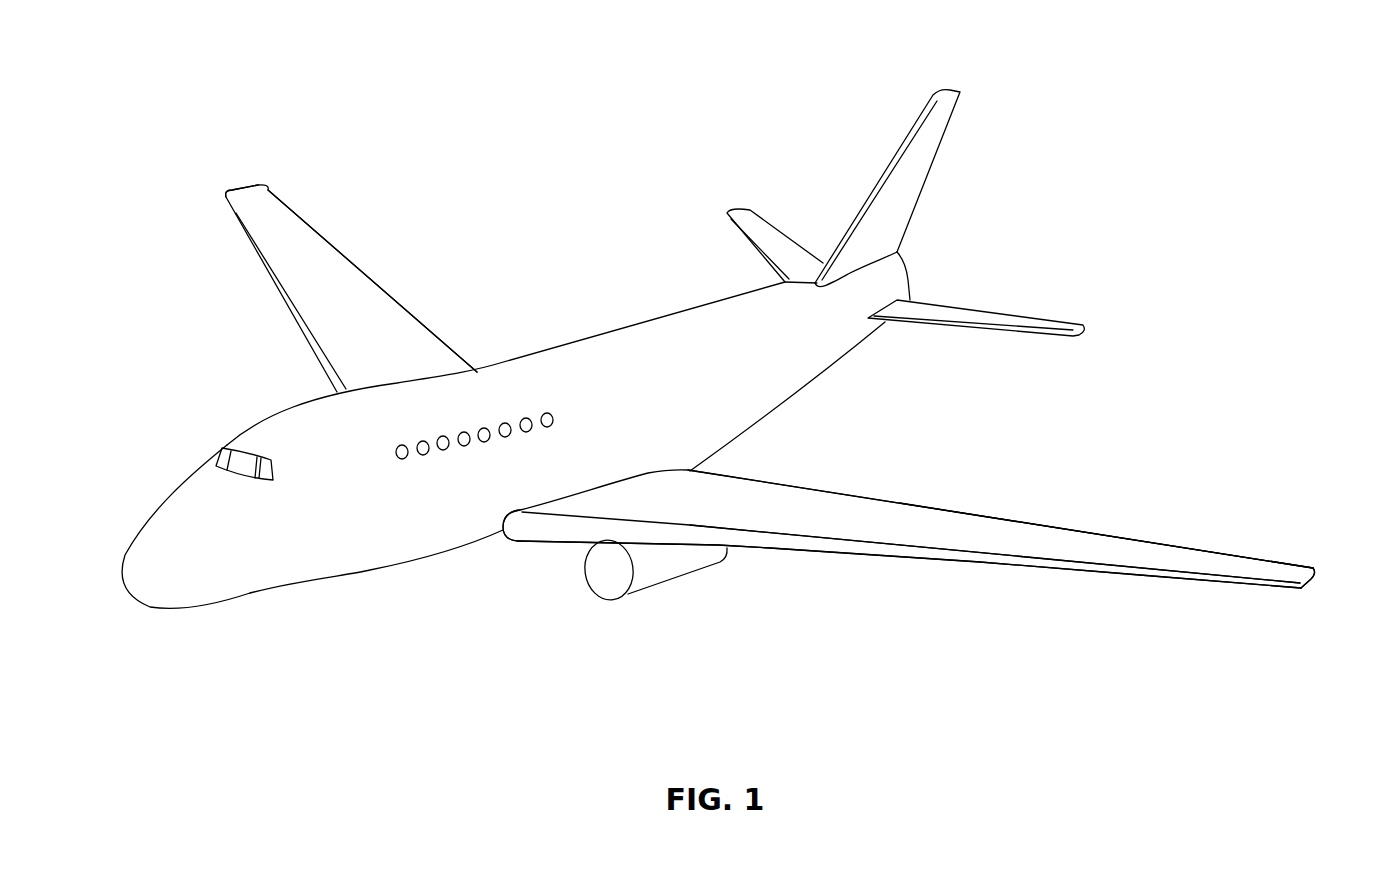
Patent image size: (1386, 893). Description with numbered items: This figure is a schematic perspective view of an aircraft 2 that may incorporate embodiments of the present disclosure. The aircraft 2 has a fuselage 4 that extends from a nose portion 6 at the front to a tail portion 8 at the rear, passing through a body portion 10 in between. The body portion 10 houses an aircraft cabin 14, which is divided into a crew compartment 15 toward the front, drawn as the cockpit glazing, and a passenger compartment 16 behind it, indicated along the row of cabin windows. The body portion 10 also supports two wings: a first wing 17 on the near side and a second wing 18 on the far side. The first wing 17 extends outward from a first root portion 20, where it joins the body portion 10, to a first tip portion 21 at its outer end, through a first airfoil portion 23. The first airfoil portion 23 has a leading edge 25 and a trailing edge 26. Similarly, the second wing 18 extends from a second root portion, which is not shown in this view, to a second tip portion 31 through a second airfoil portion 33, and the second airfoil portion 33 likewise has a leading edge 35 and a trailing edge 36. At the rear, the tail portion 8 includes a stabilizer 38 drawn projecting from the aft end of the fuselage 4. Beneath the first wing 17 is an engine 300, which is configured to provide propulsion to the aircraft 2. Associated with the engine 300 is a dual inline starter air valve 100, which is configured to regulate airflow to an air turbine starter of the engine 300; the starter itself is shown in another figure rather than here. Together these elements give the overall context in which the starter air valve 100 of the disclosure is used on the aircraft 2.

The aircraft 2 is at (112, 425).
The fuselage 4 is at (472, 453).
The nose portion 6 is at (132, 581).
The tail portion 8 is at (905, 237).
The body portion 10 is at (728, 432).
The aircraft cabin 14 is at (510, 472).
The crew compartment 15 is at (221, 446).
The passenger compartment 16 is at (552, 377).
The first wing 17 is at (928, 562).
The second wing 18 is at (323, 265).
The first root portion 20 is at (941, 543).
The first tip portion 21 is at (1313, 577).
The first airfoil portion 23 is at (803, 500).
The leading edge 25 is at (722, 537).
The trailing edge 26 is at (957, 510).
The second tip portion 31 is at (234, 190).
The second airfoil portion 33 is at (303, 237).
The leading edge 35 is at (240, 220).
The trailing edge 36 is at (327, 239).
The stabilizer 38 is at (948, 295).
The dual inline starter air valve 100 is at (602, 603).
The engine 300 is at (585, 575).